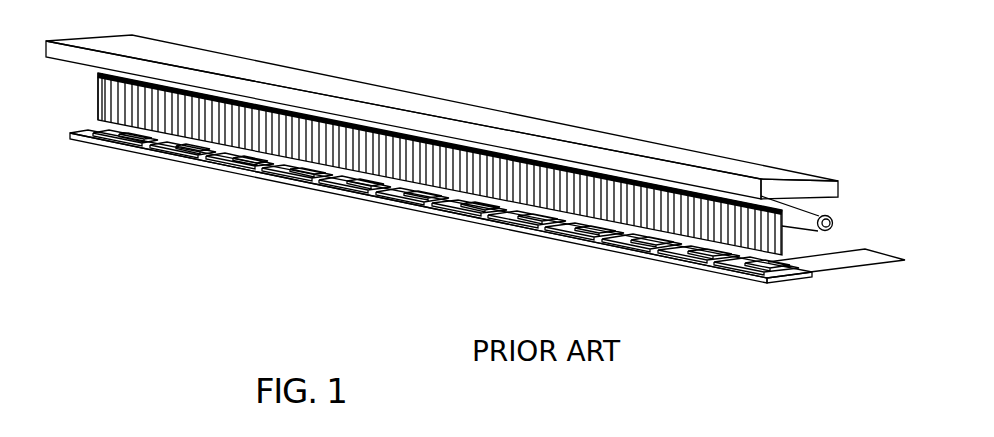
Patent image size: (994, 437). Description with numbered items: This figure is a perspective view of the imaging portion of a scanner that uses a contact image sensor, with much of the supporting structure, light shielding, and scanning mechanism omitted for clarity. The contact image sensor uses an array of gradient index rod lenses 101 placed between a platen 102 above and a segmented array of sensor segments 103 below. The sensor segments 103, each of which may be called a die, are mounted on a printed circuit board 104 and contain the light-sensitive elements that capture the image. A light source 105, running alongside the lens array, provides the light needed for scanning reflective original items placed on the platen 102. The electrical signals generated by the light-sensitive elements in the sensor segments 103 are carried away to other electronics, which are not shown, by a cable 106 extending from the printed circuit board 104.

The gradient index rod lenses 101 is at (101, 104).
The platen 102 is at (180, 50).
The sensor segments 103 is at (628, 238).
The printed circuit board 104 is at (785, 281).
The light source 105 is at (824, 212).
The cable 106 is at (827, 268).